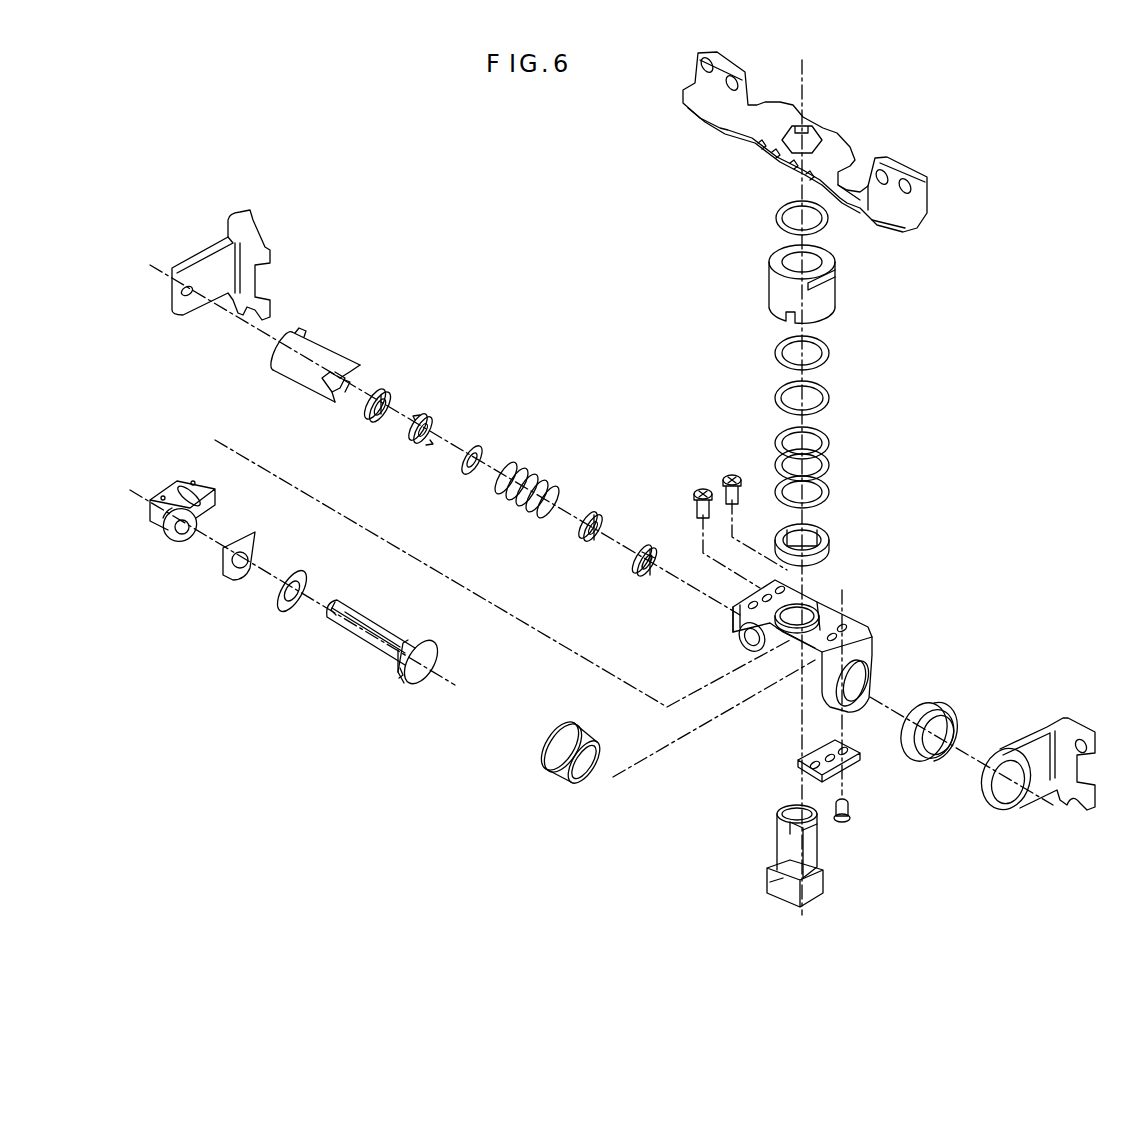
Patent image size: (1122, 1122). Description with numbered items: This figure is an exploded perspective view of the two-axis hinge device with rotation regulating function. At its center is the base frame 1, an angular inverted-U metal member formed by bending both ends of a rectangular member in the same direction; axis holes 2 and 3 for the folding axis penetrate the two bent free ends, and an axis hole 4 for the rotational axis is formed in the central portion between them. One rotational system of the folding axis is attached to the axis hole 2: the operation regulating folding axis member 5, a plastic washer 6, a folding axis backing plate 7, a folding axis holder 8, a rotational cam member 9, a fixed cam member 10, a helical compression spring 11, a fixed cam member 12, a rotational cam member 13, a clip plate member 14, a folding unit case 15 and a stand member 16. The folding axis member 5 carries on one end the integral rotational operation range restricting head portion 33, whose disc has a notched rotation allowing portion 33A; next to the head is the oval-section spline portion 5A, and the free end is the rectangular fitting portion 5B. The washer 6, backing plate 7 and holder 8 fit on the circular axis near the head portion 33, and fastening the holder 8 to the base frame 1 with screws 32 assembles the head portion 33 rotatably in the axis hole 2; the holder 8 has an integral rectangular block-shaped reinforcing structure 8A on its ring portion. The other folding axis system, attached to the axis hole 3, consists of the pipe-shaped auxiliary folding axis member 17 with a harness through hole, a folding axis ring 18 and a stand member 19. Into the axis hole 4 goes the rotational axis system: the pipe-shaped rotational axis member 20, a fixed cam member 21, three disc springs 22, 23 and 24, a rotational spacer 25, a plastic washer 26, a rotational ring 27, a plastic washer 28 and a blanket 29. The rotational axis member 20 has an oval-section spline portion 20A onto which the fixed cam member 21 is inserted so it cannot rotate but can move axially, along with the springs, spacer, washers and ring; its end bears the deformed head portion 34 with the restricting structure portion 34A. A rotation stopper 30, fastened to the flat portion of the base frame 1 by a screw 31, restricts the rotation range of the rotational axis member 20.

The base frame 1 is at (870, 625).
The axis hole for folding axis 2 is at (742, 636).
The axis hole for folding axis 3 is at (868, 680).
The axis hole for rotational axis 4 is at (804, 610).
The operation regulating folding axis member 5 is at (372, 648).
The spline portion 5A is at (365, 626).
The fitting portion 5B is at (330, 604).
The plastic washer 6 is at (284, 603).
The folding axis backing plate 7 is at (228, 568).
The folding axis holder 8 is at (160, 532).
The reinforcing structure 8A is at (213, 493).
The rotational cam member 9 is at (640, 578).
The fixed cam member 10 is at (585, 540).
The helical compression spring 11 is at (520, 505).
The fixed cam member 12 is at (466, 472).
The rotational cam member 13 is at (413, 443).
The clip plate member 14 is at (372, 418).
The folding unit case 15 is at (298, 373).
The stand member 16 is at (190, 302).
The auxiliary folding axis member 17 is at (555, 770).
The folding axis ring 18 is at (933, 705).
The stand member 19 is at (1040, 735).
The rotational axis member 20 is at (785, 846).
The spline portion 20A is at (812, 851).
The fixed cam member 21 is at (829, 542).
The disc spring 22 is at (828, 494).
The disc spring 23 is at (828, 466).
The disc spring 24 is at (828, 444).
The rotational spacer 25 is at (823, 406).
The plastic washer 26 is at (830, 355).
The rotational ring 27 is at (838, 298).
The plastic washer 28 is at (830, 222).
The blanket 29 is at (838, 148).
The rotation stopper 30 is at (852, 758).
The screw 31 is at (850, 810).
The screws 32 is at (730, 475).
The rotational operation range restricting head portion 33 is at (432, 660).
The rotation allowing portion 33A is at (404, 680).
The rotational operation range restricting deformed head portion 34 is at (828, 892).
The restricting structure portion 34A is at (775, 893).